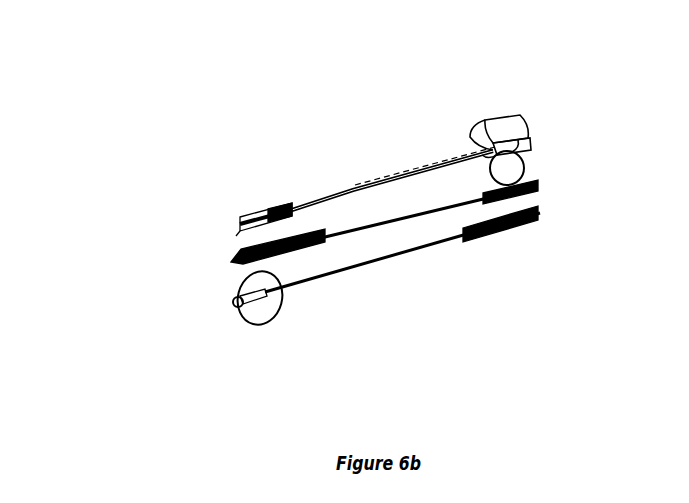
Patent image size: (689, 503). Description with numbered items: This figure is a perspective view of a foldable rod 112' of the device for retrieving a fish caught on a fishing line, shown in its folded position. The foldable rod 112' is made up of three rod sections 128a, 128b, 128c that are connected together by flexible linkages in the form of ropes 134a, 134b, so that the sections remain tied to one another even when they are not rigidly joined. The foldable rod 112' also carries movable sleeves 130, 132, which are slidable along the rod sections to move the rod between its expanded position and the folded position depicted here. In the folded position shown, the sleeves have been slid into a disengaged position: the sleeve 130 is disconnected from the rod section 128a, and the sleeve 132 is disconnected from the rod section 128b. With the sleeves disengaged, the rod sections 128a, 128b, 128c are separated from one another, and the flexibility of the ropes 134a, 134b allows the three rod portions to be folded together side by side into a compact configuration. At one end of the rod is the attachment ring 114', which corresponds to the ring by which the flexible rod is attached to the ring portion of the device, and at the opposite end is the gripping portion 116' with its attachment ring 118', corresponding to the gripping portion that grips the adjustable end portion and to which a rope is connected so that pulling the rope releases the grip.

The foldable rod 112' is at (64, 62).
The attachment ring 114' is at (224, 312).
The gripping portion 116' is at (523, 105).
The attachment ring 118' is at (553, 142).
The rod section 128a is at (366, 189).
The rod section 128b is at (367, 226).
The rod section 128c is at (390, 253).
The movable sleeve 130 is at (284, 240).
The movable sleeve 132 is at (507, 228).
The rope 134a is at (227, 245).
The rope 134b is at (538, 195).